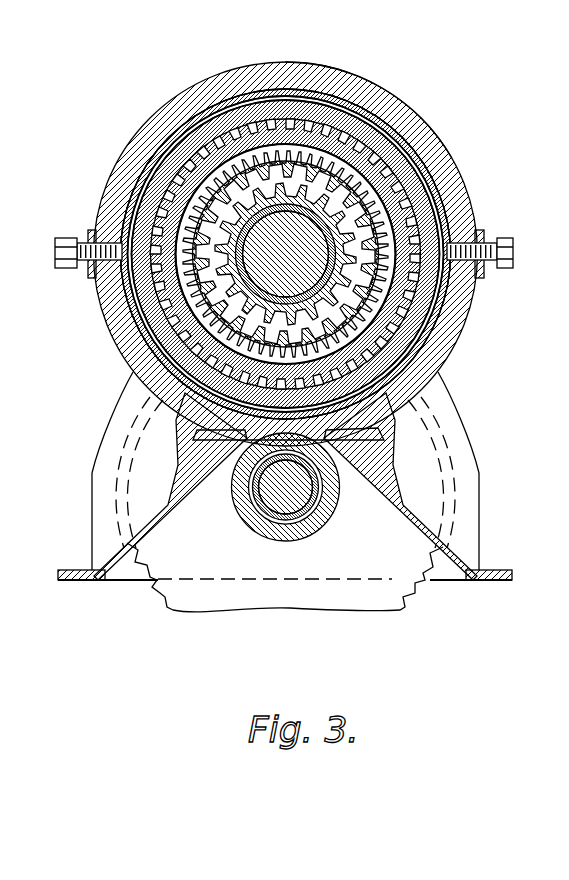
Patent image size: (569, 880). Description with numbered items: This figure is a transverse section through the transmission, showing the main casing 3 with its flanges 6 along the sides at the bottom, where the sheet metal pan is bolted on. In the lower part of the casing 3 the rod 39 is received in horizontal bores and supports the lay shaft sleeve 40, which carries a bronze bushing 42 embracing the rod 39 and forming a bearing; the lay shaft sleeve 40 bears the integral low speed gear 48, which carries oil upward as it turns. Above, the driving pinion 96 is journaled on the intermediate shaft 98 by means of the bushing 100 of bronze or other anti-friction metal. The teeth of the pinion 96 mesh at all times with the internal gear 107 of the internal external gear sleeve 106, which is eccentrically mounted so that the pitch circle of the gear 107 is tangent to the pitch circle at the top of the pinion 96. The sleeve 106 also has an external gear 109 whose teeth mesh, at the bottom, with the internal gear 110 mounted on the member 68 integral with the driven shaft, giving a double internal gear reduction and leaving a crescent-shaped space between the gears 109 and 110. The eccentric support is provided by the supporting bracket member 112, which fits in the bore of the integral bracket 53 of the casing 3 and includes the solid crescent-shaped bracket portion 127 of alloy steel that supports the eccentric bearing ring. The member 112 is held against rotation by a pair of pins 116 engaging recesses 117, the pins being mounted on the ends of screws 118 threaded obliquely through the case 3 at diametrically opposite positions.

The main casing 3 is at (468, 208).
The flanges 6 is at (61, 571).
The rod 39 is at (282, 526).
The lay shaft sleeve 40 is at (238, 500).
The bronze bushing 42 is at (260, 518).
The low speed gear 48 is at (358, 592).
The integral bracket 53 is at (352, 432).
The member 68 is at (147, 153).
The driving pinion 96 is at (270, 215).
The intermediate shaft 98 is at (287, 186).
The bushing 100 is at (320, 273).
The internal external gear sleeve 106 is at (455, 175).
The internal gear 107 is at (322, 330).
The external gear 109 is at (352, 94).
The internal gear 110 is at (319, 73).
The supporting bracket member 112 is at (120, 203).
The pins 116 is at (93, 270).
The recesses 117 is at (100, 300).
The screws 118 is at (85, 238).
The crescent-shaped bracket portion 127 is at (197, 110).